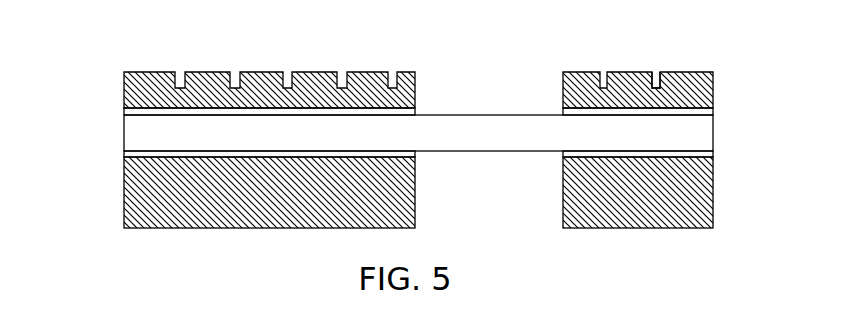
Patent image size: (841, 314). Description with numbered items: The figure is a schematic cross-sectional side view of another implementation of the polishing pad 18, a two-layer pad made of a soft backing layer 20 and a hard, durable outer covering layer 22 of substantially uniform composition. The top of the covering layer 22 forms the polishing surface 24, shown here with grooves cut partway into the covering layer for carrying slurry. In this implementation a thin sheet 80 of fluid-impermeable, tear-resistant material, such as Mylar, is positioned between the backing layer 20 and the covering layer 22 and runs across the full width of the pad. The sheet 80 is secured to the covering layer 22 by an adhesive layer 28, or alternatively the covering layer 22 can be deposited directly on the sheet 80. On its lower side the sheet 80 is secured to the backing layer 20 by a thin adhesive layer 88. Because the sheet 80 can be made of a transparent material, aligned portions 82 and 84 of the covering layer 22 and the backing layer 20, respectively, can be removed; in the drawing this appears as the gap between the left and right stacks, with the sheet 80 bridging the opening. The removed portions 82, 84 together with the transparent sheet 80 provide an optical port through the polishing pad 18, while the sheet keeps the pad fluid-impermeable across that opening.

The polishing pad 18 is at (70, 115).
The backing layer 20 is at (713, 192).
The covering layer 22 is at (713, 93).
The polishing surface 24 is at (625, 72).
The adhesive layer 28 is at (713, 117).
The sheet 80 is at (124, 133).
The aligned portion of the covering layer 82 is at (415, 90).
The aligned portion of the backing layer 84 is at (415, 192).
The adhesive layer 88 is at (713, 153).